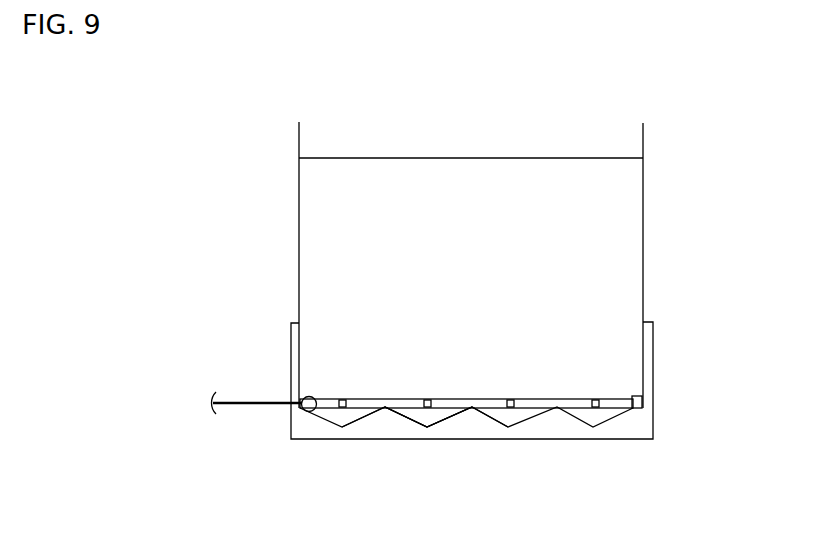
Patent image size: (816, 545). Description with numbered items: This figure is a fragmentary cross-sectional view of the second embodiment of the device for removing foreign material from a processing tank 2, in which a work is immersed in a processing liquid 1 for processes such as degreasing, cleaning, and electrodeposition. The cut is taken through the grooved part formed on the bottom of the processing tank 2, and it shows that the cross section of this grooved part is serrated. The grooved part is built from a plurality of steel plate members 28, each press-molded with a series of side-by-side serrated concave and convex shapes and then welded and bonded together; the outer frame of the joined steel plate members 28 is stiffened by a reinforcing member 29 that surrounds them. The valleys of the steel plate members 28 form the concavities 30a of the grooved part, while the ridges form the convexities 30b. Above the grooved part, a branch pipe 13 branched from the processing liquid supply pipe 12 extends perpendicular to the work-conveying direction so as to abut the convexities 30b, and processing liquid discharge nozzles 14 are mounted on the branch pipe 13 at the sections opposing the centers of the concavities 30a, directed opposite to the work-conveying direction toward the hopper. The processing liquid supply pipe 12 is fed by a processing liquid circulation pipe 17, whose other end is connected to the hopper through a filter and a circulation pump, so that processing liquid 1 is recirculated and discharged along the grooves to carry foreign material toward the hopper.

The processing liquid 1 is at (345, 172).
The processing tank 2 is at (658, 182).
The processing liquid supply pipe 12 is at (311, 396).
The branch pipe 13 is at (582, 399).
The processing liquid discharge nozzle 14 is at (427, 399).
The processing liquid circulation pipe 17 is at (238, 405).
The steel plate member 28 is at (535, 414).
The reinforcing member 29 is at (455, 430).
The concavity 30a is at (418, 420).
The convexity 30b is at (385, 405).